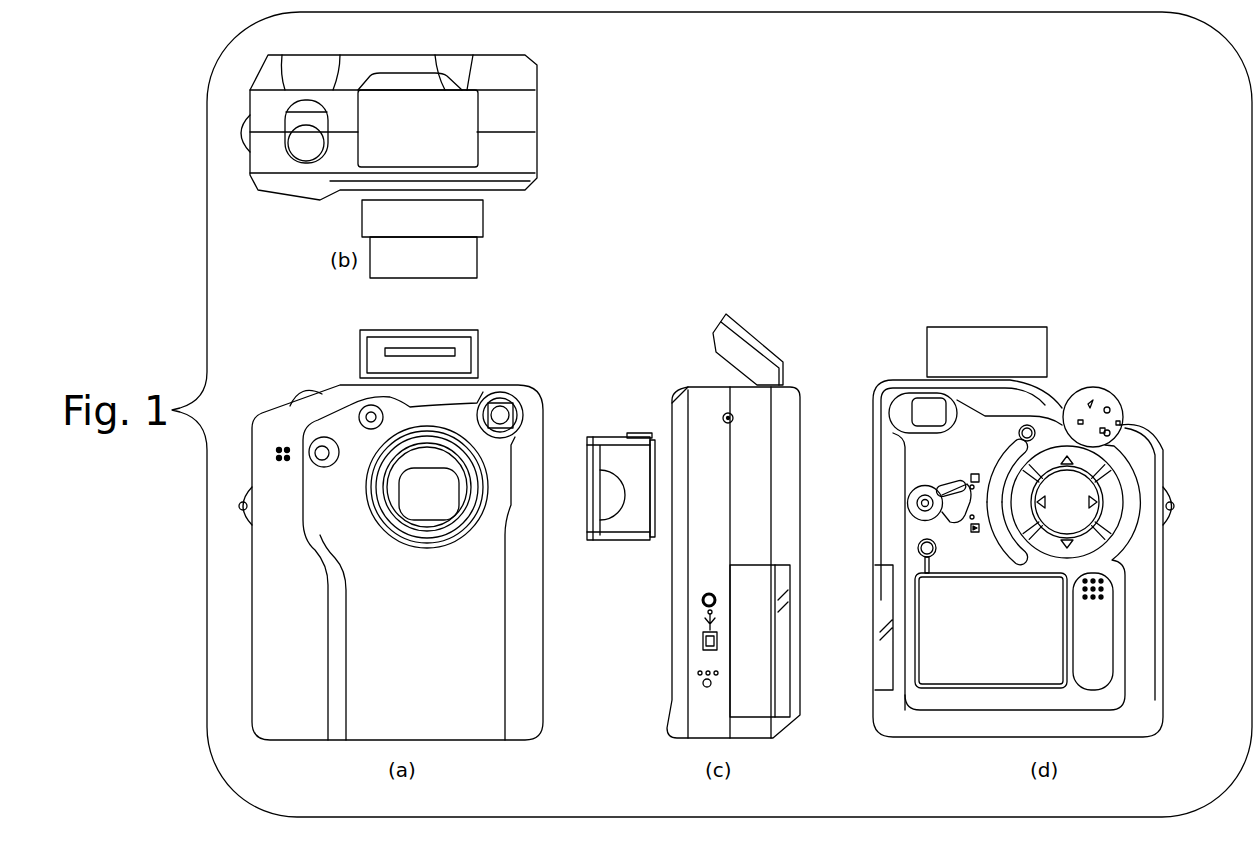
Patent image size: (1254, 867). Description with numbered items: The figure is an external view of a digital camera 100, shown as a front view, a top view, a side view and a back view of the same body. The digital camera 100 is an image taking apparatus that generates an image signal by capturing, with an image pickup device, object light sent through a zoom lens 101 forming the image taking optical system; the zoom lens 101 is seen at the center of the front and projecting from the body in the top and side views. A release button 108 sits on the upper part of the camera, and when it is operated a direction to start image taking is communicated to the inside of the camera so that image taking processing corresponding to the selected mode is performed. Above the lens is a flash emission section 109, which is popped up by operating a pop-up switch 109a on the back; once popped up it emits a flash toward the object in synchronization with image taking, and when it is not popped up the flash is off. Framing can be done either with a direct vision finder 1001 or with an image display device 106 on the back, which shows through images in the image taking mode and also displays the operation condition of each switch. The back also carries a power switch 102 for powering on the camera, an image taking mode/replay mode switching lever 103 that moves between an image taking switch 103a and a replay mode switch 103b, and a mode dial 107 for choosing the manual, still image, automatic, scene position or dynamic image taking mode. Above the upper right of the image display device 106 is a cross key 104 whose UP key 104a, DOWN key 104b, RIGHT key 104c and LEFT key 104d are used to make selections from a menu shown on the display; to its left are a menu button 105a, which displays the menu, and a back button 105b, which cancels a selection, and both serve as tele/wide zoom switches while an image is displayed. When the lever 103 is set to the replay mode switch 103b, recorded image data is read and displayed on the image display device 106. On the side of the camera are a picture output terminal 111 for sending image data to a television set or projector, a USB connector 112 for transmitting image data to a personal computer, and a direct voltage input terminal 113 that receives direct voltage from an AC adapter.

The digital camera 100 is at (514, 364).
The zoom lens 101 is at (423, 280).
The power switch 102 is at (908, 505).
The image taking mode/replay mode switching lever 103 is at (940, 490).
The image taking switch 103a is at (973, 470).
The replay mode switch 103b is at (976, 534).
The cross key 104 is at (1104, 474).
The UP key 104a is at (1108, 458).
The DOWN key 104b is at (1085, 548).
The RIGHT key 104c is at (1112, 503).
The LEFT key 104d is at (1088, 500).
The menu button 105a is at (1010, 553).
The back button 105b is at (1013, 445).
The image display device (LCD) 106 is at (985, 667).
The mode dial 107 is at (1095, 390).
The release button 108 is at (303, 148).
The flash emission section 109 is at (470, 330).
The pop-up switch 109a is at (1035, 425).
The picture output terminal 111 is at (702, 600).
The USB connector 112 is at (700, 645).
The direct voltage input terminal 113 is at (703, 685).
The direct vision finder 1001 is at (532, 415).